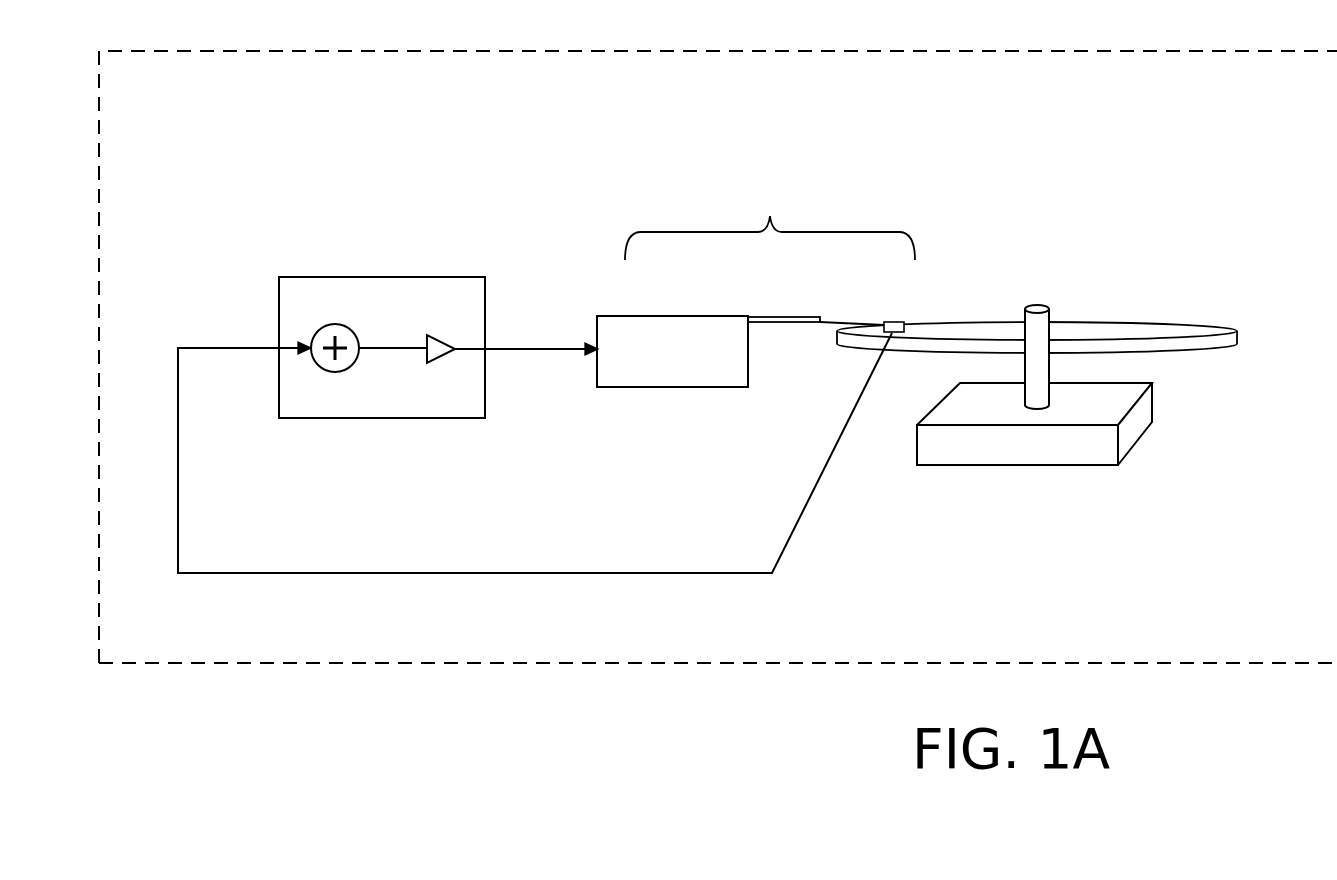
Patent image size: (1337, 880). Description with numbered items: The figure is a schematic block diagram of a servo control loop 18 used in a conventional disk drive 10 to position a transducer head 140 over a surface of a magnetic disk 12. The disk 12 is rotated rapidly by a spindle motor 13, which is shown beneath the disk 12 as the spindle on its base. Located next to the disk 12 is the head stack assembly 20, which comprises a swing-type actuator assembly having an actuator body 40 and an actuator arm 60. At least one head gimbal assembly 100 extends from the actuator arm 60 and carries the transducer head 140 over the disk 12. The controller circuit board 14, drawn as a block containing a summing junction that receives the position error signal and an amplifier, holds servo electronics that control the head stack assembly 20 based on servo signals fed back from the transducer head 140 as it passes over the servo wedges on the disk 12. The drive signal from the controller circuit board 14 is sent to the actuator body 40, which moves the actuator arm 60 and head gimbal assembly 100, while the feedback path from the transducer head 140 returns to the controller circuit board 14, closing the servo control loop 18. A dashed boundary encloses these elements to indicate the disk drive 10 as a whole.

The disk drive 10 is at (958, 51).
The magnetic disk 12 is at (1238, 335).
The spindle motor 13 is at (1152, 418).
The controller circuit board 14 is at (405, 277).
The servo control loop 18 is at (860, 531).
The head stack assembly 20 is at (770, 220).
The actuator body 40 is at (670, 316).
The actuator arm 60 is at (778, 317).
The head gimbal assembly 100 is at (846, 323).
The transducer head 140 is at (896, 322).